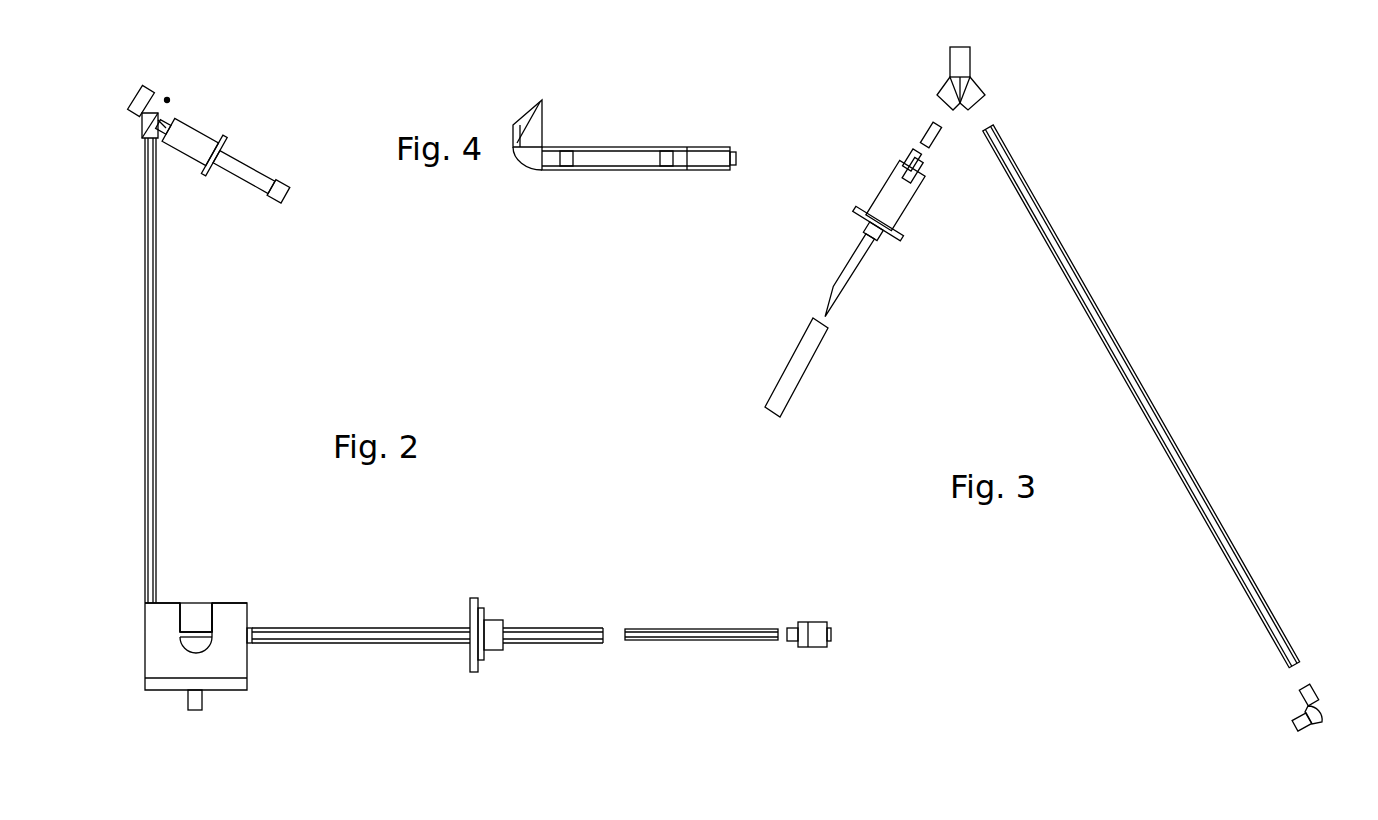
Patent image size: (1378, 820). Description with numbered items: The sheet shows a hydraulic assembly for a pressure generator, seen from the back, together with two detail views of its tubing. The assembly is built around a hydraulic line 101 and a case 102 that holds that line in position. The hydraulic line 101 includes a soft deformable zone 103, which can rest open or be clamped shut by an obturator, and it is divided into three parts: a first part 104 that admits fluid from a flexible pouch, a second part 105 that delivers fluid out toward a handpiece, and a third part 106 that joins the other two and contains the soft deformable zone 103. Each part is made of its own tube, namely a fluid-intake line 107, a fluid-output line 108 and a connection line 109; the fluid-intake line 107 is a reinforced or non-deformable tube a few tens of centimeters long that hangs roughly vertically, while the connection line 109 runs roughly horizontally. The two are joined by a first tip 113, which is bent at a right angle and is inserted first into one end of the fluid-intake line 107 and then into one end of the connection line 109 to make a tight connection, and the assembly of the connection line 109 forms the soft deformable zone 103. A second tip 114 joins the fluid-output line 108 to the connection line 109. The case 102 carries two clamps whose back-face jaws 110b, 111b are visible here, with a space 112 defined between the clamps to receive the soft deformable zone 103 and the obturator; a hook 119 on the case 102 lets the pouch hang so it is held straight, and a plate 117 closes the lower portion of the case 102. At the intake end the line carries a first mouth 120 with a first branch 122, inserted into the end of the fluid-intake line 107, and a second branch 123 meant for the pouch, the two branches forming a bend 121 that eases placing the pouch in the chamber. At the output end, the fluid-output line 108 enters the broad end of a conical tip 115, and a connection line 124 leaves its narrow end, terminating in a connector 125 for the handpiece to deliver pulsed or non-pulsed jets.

In FIG. 2, the hydraulic line 101 is at (262, 354).
In FIG. 2, the case 102 is at (224, 702).
In FIG. 2, the soft deformable zone 103 is at (195, 650).
In FIG. 4, the soft deformable zone 103 is at (612, 150).
In FIG. 2, the first part 104 is at (158, 245).
In FIG. 3, the first part 104 is at (1050, 212).
In FIG. 2, the second part 105 is at (352, 650).
In FIG. 2, the third part 106 is at (190, 630).
In FIG. 4, the third part 106 is at (628, 170).
In FIG. 2, the fluid-intake line 107 is at (155, 392).
In FIG. 3, the fluid-intake line 107 is at (1130, 355).
In FIG. 2, the fluid-output line 108 is at (403, 630).
In FIG. 2, the connection line 109 is at (212, 630).
In FIG. 4, the connection line 109 is at (580, 172).
In FIG. 2, the jaw of the first clamp 110b is at (163, 600).
In FIG. 2, the jaw of the second clamp 111b is at (242, 628).
In FIG. 2, the space 112 is at (206, 604).
In FIG. 3, the first tip 113 is at (1308, 694).
In FIG. 4, the first tip 113 is at (522, 124).
In FIG. 2, the second tip 114 is at (256, 638).
In FIG. 4, the second tip 114 is at (737, 158).
In FIG. 2, the conical tip 115 is at (500, 648).
In FIG. 2, the base plate 117 is at (238, 693).
In FIG. 2, the hook 119 is at (195, 708).
In FIG. 2, the first mouth 120 is at (168, 99).
In FIG. 3, the first mouth 120 is at (970, 82).
In FIG. 2, the bend 121 is at (138, 90).
In FIG. 3, the bend 121 is at (948, 62).
In FIG. 2, the first branch 122 is at (141, 124).
In FIG. 3, the first branch 122 is at (982, 100).
In FIG. 2, the second branch 123 is at (198, 127).
In FIG. 3, the second branch 123 is at (942, 98).
In FIG. 2, the connection line 124 is at (630, 632).
In FIG. 2, the connector 125 is at (822, 624).